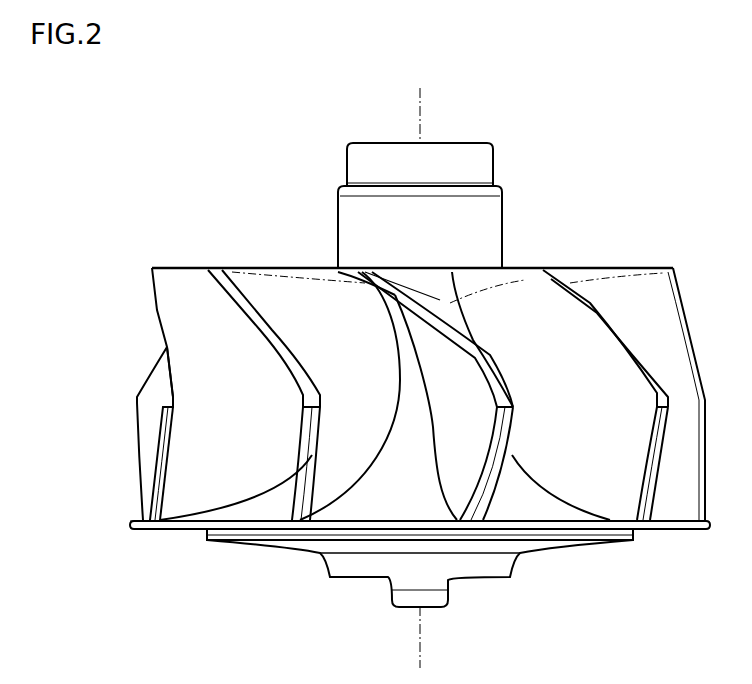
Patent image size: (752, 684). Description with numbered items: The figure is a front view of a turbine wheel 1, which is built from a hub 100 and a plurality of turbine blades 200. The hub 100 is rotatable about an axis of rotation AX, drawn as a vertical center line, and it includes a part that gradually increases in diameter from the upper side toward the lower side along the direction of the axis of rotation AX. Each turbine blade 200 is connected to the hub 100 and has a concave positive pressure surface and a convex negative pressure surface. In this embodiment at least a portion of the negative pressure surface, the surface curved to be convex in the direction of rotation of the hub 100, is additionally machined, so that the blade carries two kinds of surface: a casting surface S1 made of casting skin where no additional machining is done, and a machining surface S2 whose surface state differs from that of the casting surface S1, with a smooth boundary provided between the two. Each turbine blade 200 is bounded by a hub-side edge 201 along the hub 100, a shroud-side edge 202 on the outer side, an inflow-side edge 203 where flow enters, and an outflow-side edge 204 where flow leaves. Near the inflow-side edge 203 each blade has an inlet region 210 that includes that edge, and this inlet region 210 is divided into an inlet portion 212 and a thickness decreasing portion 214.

The turbine wheel 1 is at (271, 102).
The hub 100 is at (504, 212).
The turbine blade 200 is at (660, 262).
The hub-side edge 201 is at (350, 492).
The shroud-side edge 202 is at (473, 357).
The inflow-side edge 203 is at (160, 437).
The outflow-side edge 204 is at (392, 268).
The inlet region 210 is at (231, 596).
The inlet portion 212 is at (175, 457).
The thickness decreasing portion 214 is at (185, 380).
The casting surface S1 is at (598, 487).
The machining surface S2 is at (278, 302).
The axis of rotation AX is at (422, 128).